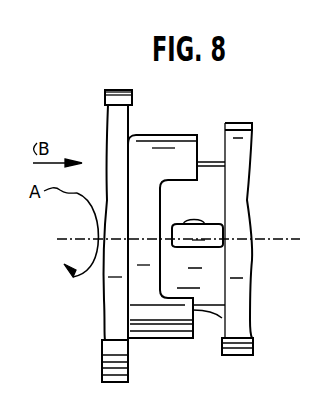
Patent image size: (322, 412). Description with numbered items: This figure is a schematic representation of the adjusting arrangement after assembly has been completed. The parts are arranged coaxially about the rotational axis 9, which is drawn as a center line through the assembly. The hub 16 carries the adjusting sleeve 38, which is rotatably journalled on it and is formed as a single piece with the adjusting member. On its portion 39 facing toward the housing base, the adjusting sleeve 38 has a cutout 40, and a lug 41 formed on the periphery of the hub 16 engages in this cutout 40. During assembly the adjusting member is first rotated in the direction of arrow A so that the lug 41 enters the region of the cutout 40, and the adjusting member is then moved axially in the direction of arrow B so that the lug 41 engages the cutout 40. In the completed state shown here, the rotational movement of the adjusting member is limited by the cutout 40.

The rotational axis 9 is at (254, 241).
The hub 16 is at (245, 125).
The adjusting sleeve 38 is at (112, 316).
The portion 39 is at (153, 340).
The cutout 40 is at (180, 188).
The lug 41 is at (206, 221).